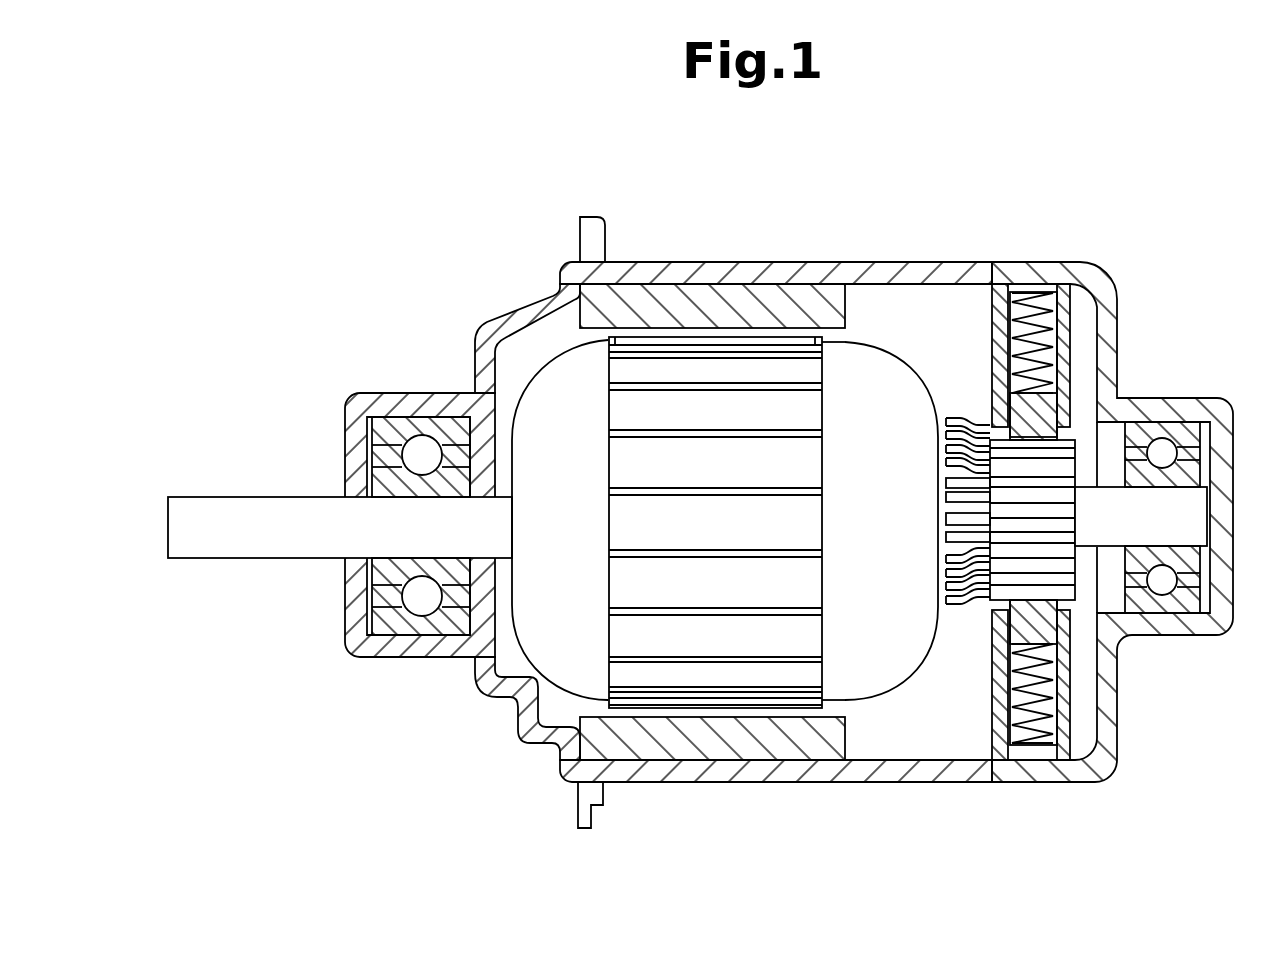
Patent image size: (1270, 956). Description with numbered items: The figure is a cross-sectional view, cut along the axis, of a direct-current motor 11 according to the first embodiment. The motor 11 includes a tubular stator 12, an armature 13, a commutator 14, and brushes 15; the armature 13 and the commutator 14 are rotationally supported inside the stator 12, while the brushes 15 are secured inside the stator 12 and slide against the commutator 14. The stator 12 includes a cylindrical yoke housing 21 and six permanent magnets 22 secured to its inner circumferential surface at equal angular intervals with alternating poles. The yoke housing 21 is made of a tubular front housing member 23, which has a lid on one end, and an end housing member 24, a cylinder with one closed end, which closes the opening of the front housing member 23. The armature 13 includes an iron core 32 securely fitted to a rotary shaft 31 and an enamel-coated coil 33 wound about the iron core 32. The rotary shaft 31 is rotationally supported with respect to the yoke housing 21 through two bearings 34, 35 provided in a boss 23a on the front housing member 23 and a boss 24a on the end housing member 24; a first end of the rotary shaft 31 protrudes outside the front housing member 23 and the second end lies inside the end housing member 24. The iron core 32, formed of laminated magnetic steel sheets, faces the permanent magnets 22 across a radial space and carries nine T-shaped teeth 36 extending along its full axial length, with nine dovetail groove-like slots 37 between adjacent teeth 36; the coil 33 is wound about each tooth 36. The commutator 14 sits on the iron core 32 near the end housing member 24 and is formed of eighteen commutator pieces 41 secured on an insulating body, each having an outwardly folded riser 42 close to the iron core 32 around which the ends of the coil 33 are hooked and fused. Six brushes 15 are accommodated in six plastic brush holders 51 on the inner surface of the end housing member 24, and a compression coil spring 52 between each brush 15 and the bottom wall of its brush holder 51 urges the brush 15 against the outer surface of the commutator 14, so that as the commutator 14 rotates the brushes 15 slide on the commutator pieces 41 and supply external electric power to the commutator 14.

The direct-current motor 11 is at (789, 469).
The stator 12 is at (789, 469).
The armature 13 is at (660, 437).
The commutator 14 is at (1002, 473).
The brush 15 is at (1043, 410).
The yoke housing 21 is at (789, 469).
The permanent magnet 22 is at (817, 263).
The front housing member 23 is at (953, 262).
The boss 23a is at (398, 400).
The end housing member 24 is at (1033, 262).
The boss 24a is at (1182, 405).
The rotary shaft 31 is at (262, 500).
The iron core 32 is at (655, 335).
The coil 33 is at (562, 378).
The bearing 34 is at (419, 628).
The bearing 35 is at (1168, 605).
The tooth 36 is at (757, 642).
The slot 37 is at (805, 548).
The commutator piece 41 is at (1060, 512).
The riser 42 is at (943, 545).
The brush holder 51 is at (1072, 302).
The compression coil spring 52 is at (1047, 367).